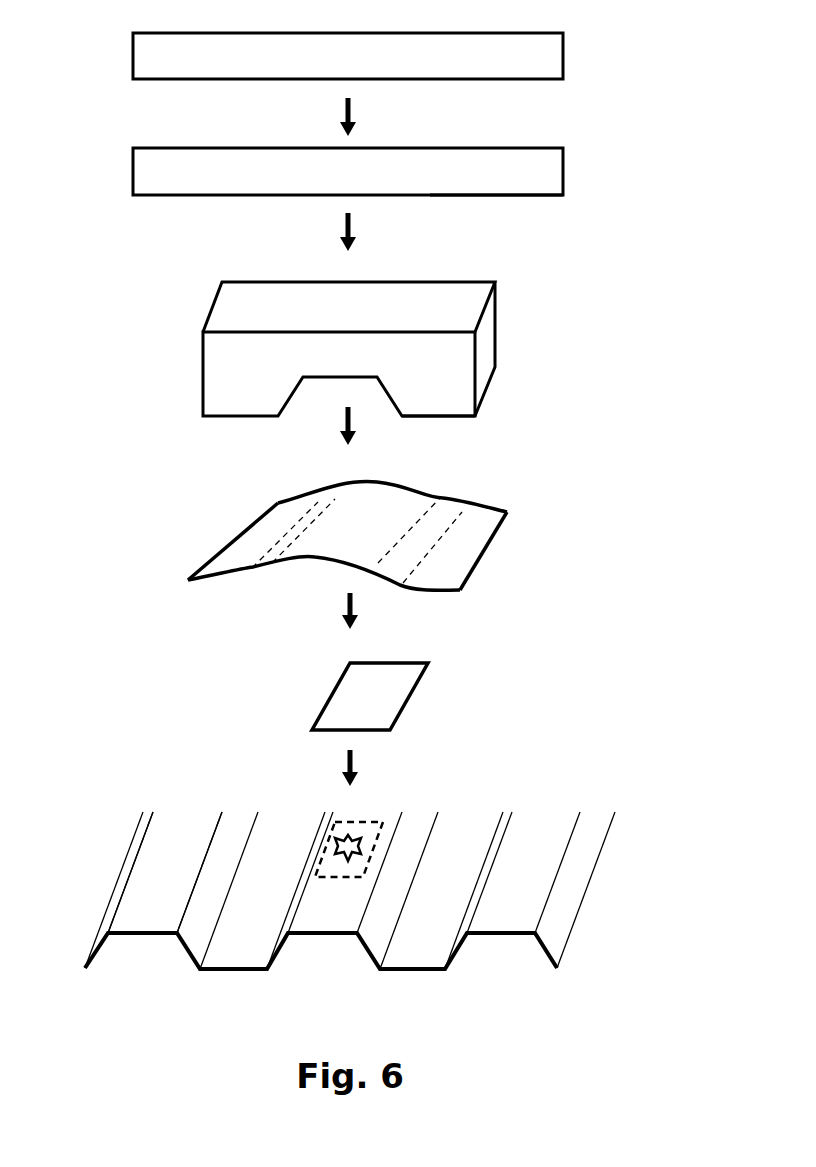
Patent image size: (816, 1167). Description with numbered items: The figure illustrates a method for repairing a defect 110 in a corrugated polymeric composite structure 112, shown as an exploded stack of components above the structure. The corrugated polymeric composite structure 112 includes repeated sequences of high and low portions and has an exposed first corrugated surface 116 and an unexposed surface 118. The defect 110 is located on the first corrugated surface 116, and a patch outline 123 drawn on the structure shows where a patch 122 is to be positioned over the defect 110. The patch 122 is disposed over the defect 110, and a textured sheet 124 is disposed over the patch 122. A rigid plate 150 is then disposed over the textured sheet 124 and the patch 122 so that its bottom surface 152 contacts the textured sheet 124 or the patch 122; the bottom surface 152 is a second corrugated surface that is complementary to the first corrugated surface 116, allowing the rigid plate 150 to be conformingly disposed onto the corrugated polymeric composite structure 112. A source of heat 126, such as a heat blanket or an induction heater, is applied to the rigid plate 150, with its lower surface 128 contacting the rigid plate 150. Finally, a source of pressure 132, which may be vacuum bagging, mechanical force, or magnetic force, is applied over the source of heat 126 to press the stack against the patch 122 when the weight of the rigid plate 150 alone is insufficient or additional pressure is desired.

The source of pressure 132 is at (553, 45).
The source of heat 126 is at (553, 178).
The lower surface 128 is at (473, 196).
The rigid plate 150 is at (463, 355).
The bottom surface 152 is at (443, 417).
The textured sheet 124 is at (458, 548).
The patch 122 is at (395, 695).
The patch outline 123 is at (343, 812).
The defect 110 is at (360, 843).
The corrugated polymeric composite structure 112 is at (583, 858).
The first corrugated surface 116 is at (140, 903).
The unexposed surface 118 is at (430, 970).